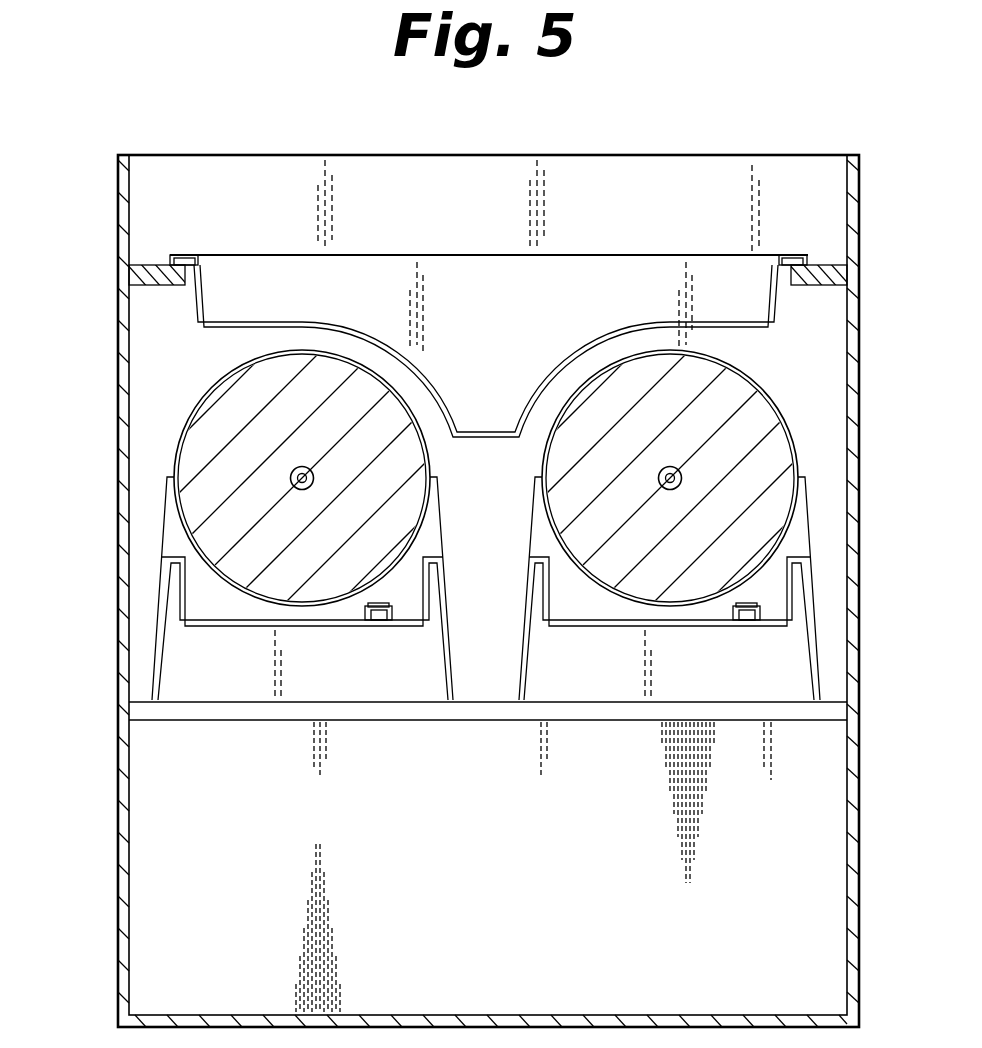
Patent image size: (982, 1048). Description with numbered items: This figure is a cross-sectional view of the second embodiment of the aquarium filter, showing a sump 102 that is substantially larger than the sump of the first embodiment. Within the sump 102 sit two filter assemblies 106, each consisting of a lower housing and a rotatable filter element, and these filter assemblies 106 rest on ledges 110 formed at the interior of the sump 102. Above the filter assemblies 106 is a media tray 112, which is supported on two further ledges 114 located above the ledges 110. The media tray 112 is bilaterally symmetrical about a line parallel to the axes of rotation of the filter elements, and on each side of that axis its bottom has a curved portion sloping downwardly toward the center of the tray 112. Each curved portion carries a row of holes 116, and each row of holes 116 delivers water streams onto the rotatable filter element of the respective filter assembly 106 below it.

The sump 102 is at (120, 898).
The filter assembly 106 is at (179, 432).
The ledge 110 is at (138, 710).
The media tray 112 is at (430, 186).
The further ledge 114 is at (130, 272).
The holes 116 is at (561, 366).